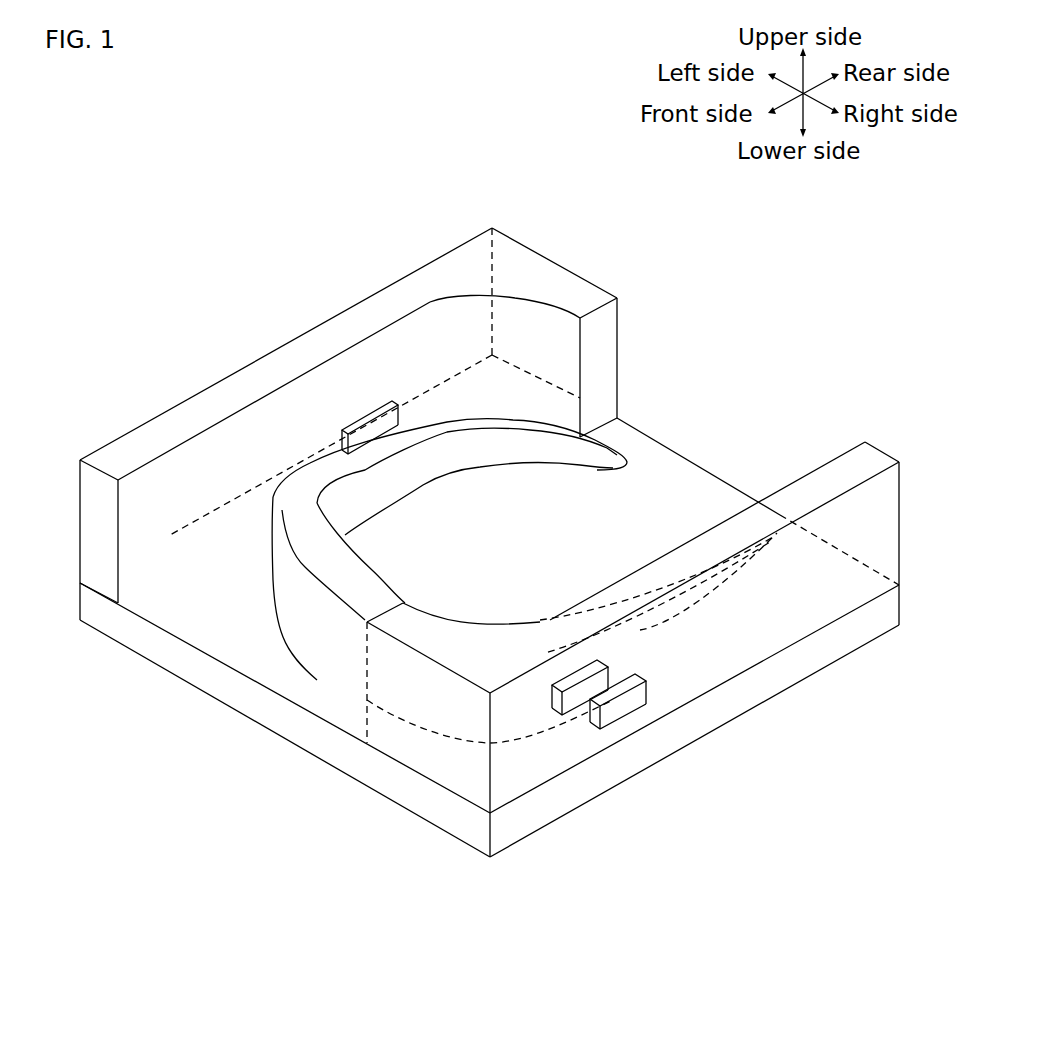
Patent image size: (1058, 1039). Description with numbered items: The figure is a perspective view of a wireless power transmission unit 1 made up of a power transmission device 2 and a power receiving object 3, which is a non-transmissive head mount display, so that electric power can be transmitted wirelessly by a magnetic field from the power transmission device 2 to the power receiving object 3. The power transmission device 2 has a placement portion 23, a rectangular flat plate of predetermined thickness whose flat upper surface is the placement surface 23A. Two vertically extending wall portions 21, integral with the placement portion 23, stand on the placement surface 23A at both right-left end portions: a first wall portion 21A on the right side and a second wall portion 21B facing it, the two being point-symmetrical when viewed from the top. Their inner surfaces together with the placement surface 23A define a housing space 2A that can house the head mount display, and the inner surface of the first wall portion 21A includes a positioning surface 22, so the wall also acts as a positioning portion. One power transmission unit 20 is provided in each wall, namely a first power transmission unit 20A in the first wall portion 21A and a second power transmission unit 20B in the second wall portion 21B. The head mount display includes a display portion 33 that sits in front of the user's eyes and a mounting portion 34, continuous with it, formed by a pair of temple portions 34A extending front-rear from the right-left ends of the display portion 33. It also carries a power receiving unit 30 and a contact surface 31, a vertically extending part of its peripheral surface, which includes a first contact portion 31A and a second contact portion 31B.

The wireless power transmission unit 1 is at (502, 981).
The power transmission device 2 is at (509, 496).
The housing space 2A is at (686, 488).
The power receiving object 3 is at (494, 551).
The power transmission unit 20 is at (489, 559).
The first power transmission unit 20A is at (623, 718).
The second power transmission unit 20B is at (363, 410).
The wall portion 21 is at (523, 460).
The first wall portion 21A is at (870, 517).
The second wall portion 21B is at (207, 388).
The positioning surface 22 is at (466, 328).
The placement portion 23 is at (475, 606).
The placement surface 23A is at (186, 613).
The power receiving unit 30 is at (576, 665).
The contact surface 31 is at (469, 815).
The first contact portion 31A is at (574, 703).
The second contact portion 31B is at (423, 700).
The display portion 33 is at (309, 614).
The mounting portion 34 is at (650, 485).
The temple portion 34A is at (762, 752).